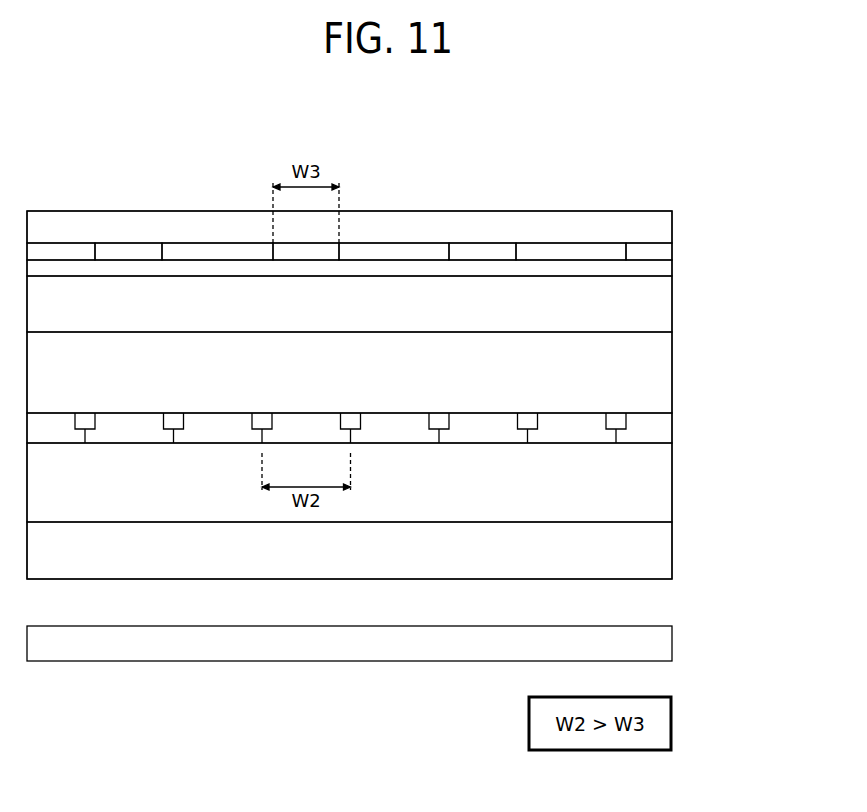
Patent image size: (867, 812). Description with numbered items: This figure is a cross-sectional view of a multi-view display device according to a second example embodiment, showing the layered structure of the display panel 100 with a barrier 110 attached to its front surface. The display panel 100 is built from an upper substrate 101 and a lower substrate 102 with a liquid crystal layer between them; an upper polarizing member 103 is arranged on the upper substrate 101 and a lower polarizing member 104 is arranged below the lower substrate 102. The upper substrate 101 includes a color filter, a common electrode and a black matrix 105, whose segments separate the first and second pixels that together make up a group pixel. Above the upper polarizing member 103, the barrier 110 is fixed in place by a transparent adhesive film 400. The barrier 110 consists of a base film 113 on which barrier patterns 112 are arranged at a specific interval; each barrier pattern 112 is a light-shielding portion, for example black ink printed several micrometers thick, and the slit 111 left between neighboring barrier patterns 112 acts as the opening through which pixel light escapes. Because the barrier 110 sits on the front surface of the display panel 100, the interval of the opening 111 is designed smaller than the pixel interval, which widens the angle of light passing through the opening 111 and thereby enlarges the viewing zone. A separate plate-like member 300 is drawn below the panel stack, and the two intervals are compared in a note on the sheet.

The display panel 100 is at (628, 153).
The barrier 110 is at (411, 236).
The slit 111 is at (123, 252).
The barrier pattern 112 is at (631, 255).
The base film 113 is at (663, 232).
The transparent adhesive film 400 is at (663, 268).
The upper polarizing member 103 is at (663, 318).
The upper substrate 101 is at (663, 370).
The black matrix 105 is at (626, 423).
The lower substrate 102 is at (663, 493).
The lower polarizing member 104 is at (663, 547).
The window member 300 is at (663, 645).